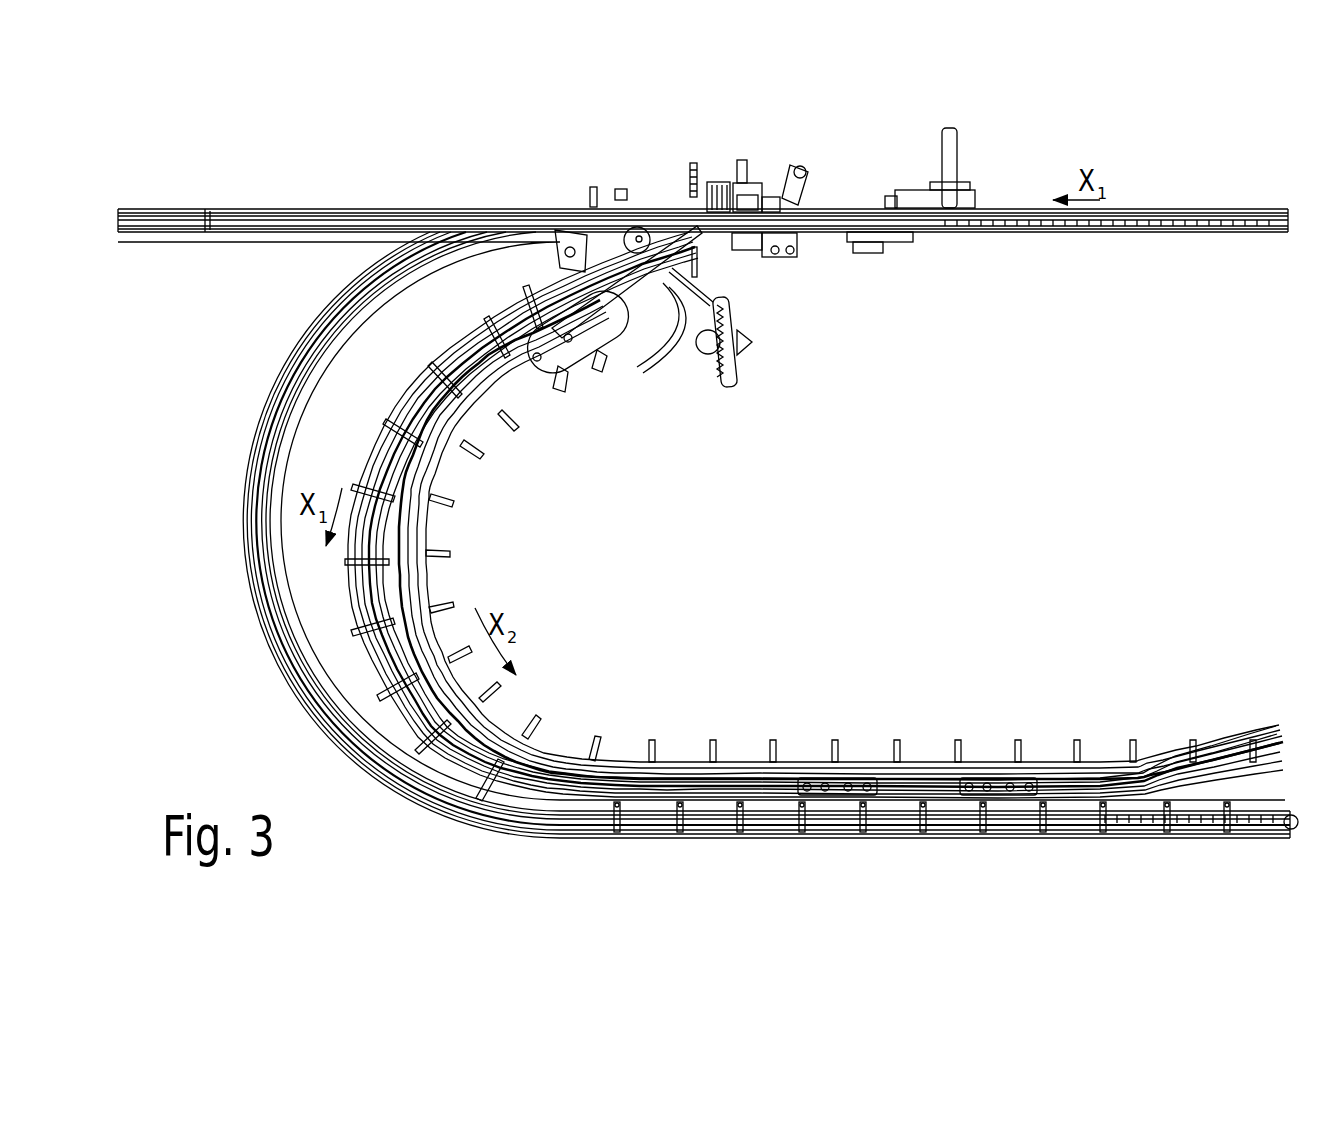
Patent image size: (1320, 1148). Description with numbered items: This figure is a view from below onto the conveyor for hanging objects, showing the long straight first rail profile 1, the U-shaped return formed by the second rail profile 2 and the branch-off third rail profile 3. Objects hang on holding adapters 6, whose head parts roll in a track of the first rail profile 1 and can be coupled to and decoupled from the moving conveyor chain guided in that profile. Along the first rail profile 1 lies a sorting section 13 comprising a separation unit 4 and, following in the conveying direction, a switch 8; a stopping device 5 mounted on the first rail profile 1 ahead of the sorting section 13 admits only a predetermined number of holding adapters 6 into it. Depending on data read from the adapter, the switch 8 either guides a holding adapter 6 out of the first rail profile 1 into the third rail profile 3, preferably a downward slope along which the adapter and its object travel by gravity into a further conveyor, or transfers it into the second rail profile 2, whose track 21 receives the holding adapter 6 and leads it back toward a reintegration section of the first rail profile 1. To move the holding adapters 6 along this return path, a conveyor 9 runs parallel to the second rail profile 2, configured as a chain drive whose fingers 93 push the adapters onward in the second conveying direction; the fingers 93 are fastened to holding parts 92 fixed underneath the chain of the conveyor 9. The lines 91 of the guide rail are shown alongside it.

The first rail profile 1 is at (1222, 208).
The second rail profile 2 is at (343, 621).
The third rail profile 3 is at (223, 212).
The separation unit 4 is at (777, 262).
The stopping device 5 is at (963, 143).
The holding adapter 6 is at (1037, 234).
The switch 8 is at (652, 232).
The conveyor 9 is at (492, 487).
The sorting section 13 is at (680, 190).
The track 21 is at (410, 392).
The guide rail profile 91 is at (505, 395).
The holding part 92 is at (542, 393).
The finger 93 is at (442, 548).